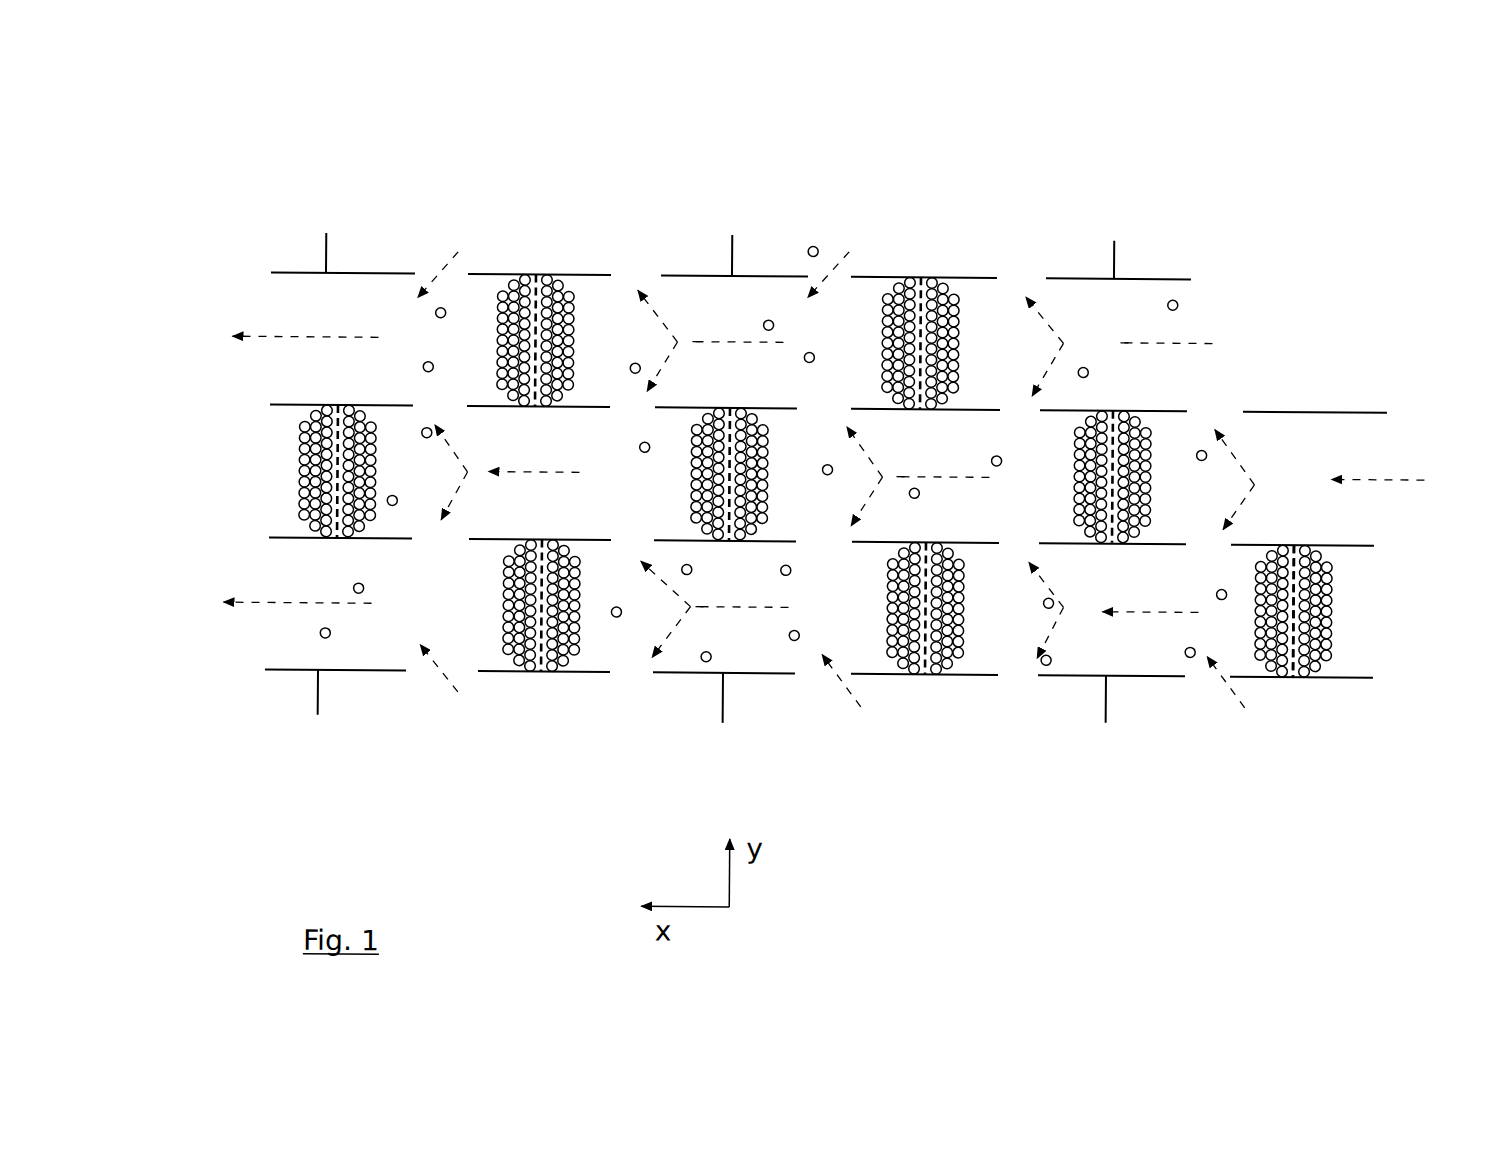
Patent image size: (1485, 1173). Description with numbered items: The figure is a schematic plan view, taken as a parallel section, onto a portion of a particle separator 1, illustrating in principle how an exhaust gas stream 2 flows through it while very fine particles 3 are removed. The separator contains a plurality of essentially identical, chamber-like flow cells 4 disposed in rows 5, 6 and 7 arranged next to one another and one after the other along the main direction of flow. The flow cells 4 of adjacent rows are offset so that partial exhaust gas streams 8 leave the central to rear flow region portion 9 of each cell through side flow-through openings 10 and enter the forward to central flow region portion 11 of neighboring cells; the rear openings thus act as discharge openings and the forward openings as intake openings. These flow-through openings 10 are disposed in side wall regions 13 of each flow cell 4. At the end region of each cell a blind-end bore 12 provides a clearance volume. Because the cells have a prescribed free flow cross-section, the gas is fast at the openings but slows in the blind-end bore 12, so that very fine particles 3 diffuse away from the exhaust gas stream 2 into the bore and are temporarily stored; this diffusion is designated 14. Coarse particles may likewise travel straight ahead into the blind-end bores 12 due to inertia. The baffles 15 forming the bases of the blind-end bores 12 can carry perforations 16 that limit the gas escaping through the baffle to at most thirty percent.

The particle separator 1 is at (950, 168).
The exhaust gas stream 2 is at (1399, 465).
The very fine particles 3 is at (768, 316).
The flow cell 4 is at (336, 392).
The row 5 is at (196, 345).
The row 6 is at (201, 460).
The row 7 is at (188, 596).
The partial exhaust gas stream 8 is at (442, 526).
The central to rear flow region portion 9 is at (594, 345).
The flow-through opening 10 is at (653, 272).
The forward to central flow region portion 11 is at (832, 346).
The blind-end bore 12 is at (584, 289).
The side wall region 13 is at (861, 270).
The very fine particle diffusion 14 is at (393, 508).
The baffle 15 is at (1303, 586).
The perforation 16 is at (1293, 660).